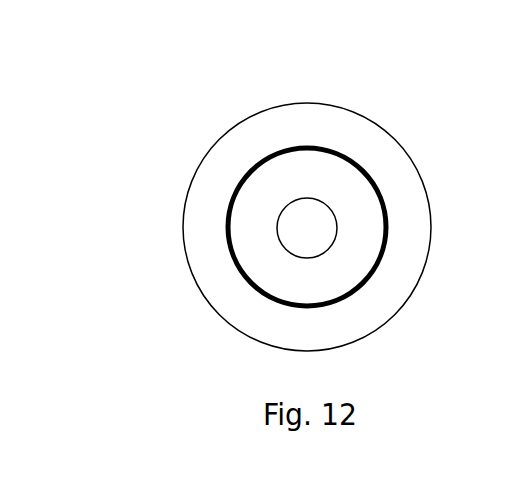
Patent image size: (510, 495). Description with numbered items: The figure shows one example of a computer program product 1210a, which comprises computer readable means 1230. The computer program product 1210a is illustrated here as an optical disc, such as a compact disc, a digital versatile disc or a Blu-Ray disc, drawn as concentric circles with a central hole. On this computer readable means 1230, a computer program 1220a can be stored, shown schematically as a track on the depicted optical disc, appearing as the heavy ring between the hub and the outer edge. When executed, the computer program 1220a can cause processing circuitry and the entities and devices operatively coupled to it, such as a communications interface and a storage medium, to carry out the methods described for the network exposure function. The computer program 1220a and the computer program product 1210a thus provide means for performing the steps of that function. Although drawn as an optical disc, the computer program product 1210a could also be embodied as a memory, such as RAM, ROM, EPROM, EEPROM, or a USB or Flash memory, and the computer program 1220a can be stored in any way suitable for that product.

The computer program product 1210a is at (158, 139).
The computer program 1220a is at (232, 247).
The computer readable means 1230 is at (264, 330).